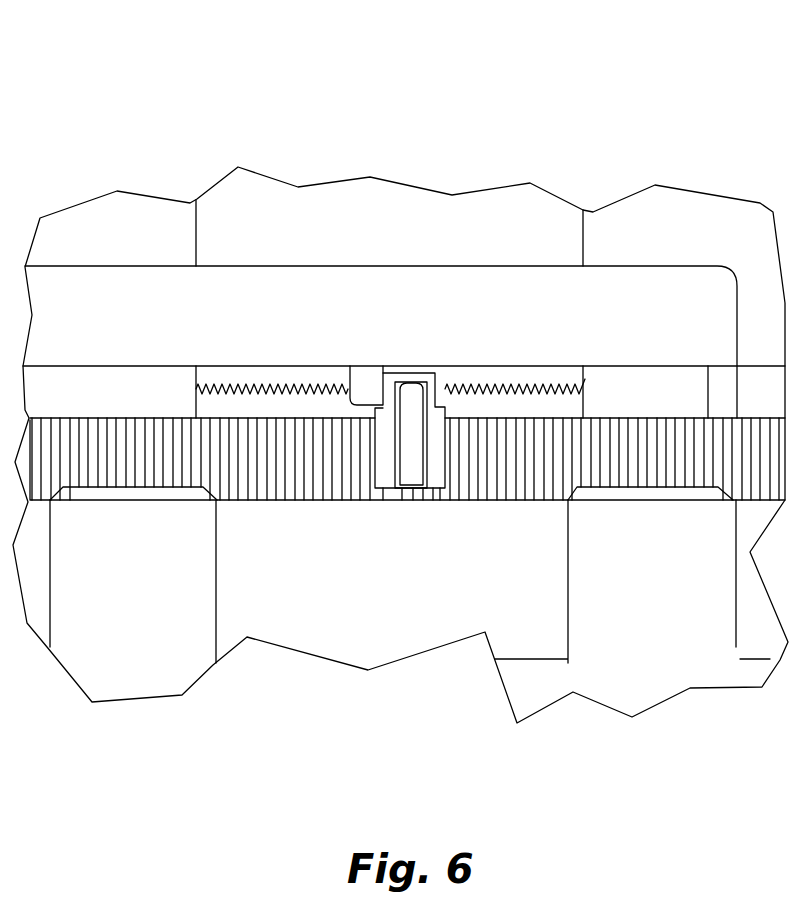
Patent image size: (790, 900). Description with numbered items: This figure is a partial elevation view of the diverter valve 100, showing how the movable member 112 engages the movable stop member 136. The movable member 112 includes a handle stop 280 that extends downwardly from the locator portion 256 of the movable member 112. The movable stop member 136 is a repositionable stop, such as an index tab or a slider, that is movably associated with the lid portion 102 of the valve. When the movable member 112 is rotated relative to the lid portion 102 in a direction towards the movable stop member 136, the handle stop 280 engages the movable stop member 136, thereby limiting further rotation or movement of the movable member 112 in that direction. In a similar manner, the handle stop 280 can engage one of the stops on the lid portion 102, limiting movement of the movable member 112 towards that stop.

The diverter valve 100 is at (552, 92).
The movable member 112 is at (329, 213).
The locator portion 256 is at (505, 283).
The handle stop 280 is at (357, 383).
The movable stop member 136 is at (413, 453).
The lid portion 102 is at (612, 627).